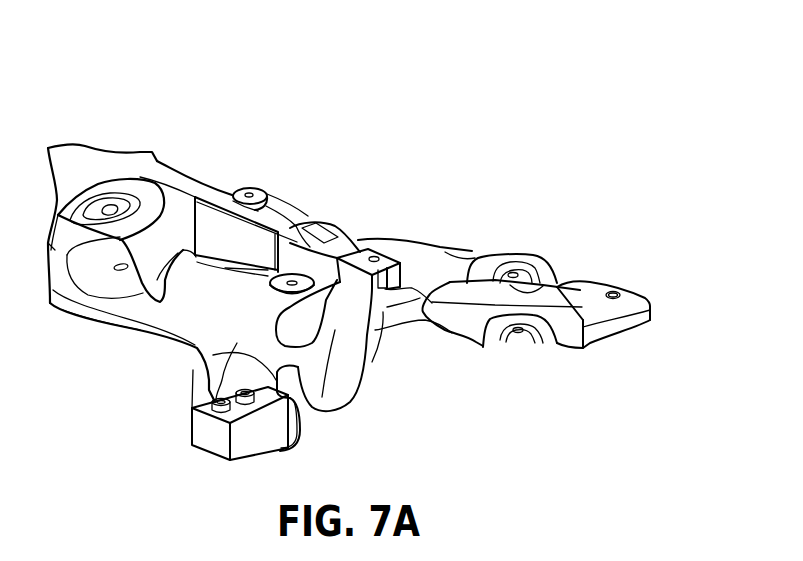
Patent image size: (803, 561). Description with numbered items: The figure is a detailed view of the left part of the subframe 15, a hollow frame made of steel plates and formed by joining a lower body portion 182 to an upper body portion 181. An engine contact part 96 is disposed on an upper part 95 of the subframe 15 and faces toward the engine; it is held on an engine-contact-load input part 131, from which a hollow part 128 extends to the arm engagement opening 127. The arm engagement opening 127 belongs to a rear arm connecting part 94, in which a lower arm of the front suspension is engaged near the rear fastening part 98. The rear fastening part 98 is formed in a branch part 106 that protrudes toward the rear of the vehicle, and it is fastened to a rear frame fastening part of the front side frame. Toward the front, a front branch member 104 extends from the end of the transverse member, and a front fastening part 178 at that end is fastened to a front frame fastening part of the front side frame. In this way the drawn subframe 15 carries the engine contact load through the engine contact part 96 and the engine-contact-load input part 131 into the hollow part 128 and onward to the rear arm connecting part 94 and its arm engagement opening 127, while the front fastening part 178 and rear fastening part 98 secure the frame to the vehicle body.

The subframe 15 is at (103, 108).
The upper part 95 is at (182, 282).
The engine contact part 96 is at (212, 197).
The engine-contact-load input part 131 is at (290, 222).
The upper body portion 181 is at (343, 210).
The front fastening part 178 is at (392, 240).
The front branch member 104 is at (297, 353).
The rear arm connecting part 94 is at (464, 264).
The hollow part 128 is at (462, 272).
The arm engagement opening 127 is at (545, 265).
The lower body portion 182 is at (425, 345).
The branch part 106 is at (605, 285).
The rear fastening part 98 is at (608, 308).